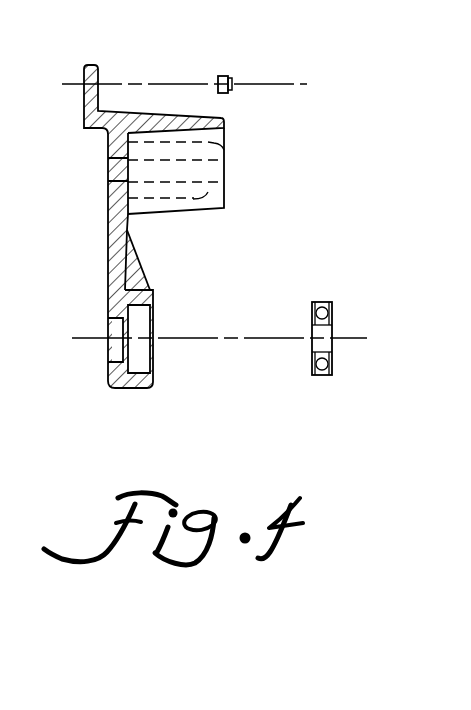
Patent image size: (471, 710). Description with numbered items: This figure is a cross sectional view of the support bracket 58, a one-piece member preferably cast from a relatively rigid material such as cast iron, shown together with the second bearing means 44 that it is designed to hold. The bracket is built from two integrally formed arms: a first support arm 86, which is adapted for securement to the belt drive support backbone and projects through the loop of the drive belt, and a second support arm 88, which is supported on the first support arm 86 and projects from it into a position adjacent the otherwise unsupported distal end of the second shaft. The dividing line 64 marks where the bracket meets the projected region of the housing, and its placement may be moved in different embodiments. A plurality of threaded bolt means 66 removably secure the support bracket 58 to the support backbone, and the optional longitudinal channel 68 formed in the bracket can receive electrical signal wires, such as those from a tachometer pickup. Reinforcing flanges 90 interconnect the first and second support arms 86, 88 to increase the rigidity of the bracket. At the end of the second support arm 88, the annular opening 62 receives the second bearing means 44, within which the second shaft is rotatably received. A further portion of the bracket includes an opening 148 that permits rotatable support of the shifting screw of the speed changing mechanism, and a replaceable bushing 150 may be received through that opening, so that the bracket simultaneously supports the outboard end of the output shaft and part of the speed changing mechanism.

The second bearing means 44 is at (323, 302).
The support bracket 58 is at (84, 226).
The annular opening 62 is at (139, 374).
The dividing line 64 is at (226, 120).
The bolt means 66 is at (228, 148).
The longitudinal channel 68 is at (108, 175).
The first support arm 86 is at (158, 111).
The second support arm 88 is at (105, 283).
The reinforcing flanges 90 is at (165, 211).
The opening 148 is at (84, 65).
The replaceable bushing 150 is at (236, 77).